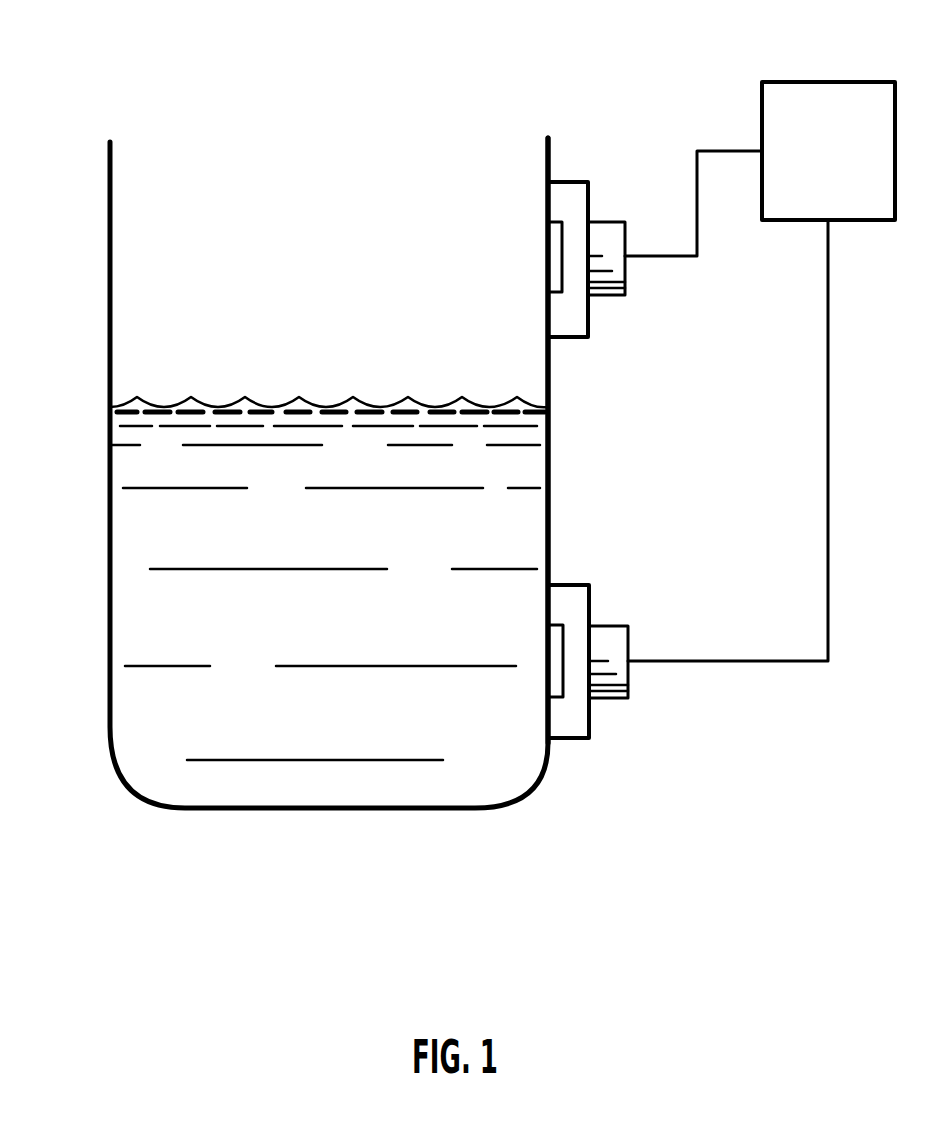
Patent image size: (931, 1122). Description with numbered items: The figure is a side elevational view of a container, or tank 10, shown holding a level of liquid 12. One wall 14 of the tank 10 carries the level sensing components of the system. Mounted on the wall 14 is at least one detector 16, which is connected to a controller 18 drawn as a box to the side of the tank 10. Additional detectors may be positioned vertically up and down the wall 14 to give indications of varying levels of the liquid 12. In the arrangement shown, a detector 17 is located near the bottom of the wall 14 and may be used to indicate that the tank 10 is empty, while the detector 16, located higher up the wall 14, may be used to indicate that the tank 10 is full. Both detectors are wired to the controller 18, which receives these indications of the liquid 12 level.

The tank 10 is at (88, 269).
The liquid 12 is at (137, 612).
The wall 14 is at (550, 378).
The detector 16 is at (581, 168).
The detector 17 is at (573, 580).
The controller 18 is at (818, 98).